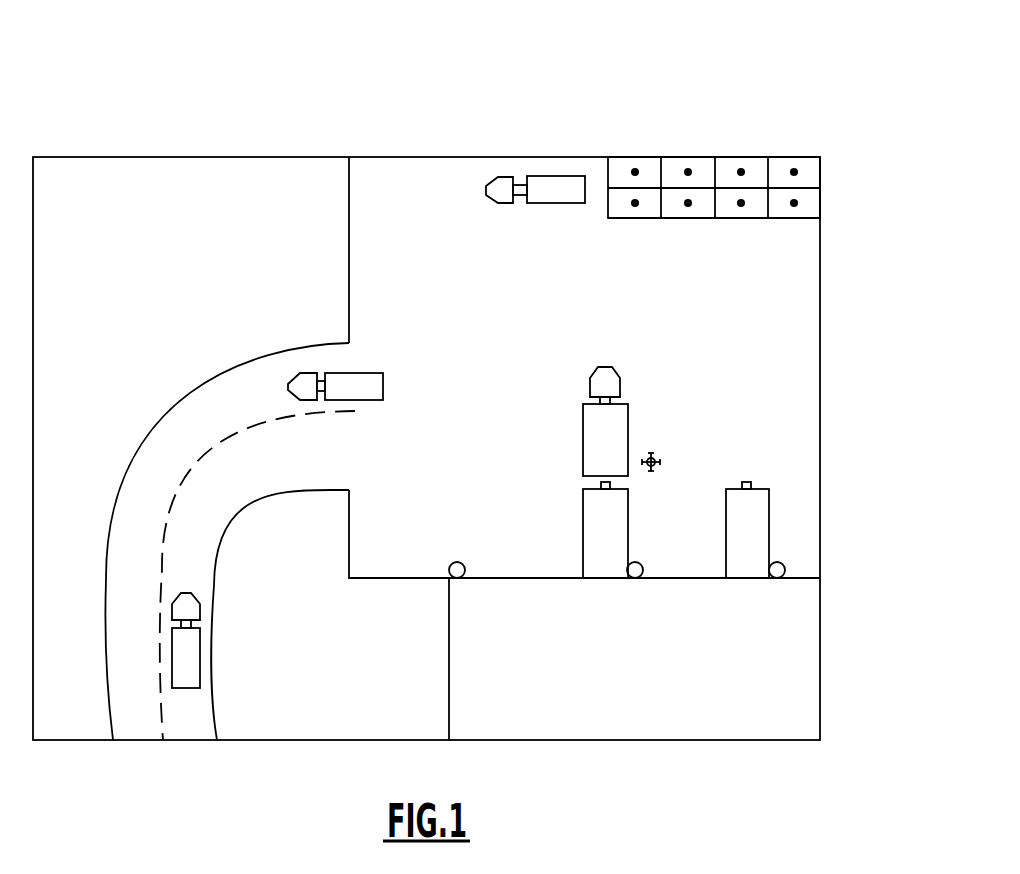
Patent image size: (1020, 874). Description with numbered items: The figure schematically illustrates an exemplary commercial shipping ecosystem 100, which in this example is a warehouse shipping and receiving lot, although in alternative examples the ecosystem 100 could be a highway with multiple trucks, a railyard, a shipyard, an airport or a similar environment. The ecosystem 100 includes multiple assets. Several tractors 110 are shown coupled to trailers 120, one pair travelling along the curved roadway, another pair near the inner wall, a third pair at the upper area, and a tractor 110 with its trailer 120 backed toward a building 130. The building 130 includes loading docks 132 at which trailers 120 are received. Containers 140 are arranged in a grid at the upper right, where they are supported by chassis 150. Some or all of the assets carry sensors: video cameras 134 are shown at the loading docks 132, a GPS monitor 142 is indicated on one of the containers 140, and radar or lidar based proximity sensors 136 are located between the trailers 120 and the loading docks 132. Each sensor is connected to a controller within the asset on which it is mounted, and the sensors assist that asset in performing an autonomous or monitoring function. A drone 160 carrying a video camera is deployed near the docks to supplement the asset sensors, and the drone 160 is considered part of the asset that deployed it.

The commercial shipping ecosystem 100 is at (272, 78).
The tractor 110 is at (502, 204).
The trailer 120 is at (563, 176).
The building 130 is at (657, 675).
The loading dock 132 is at (593, 537).
The video camera 134 is at (457, 562).
The proximity sensor 136 is at (602, 480).
The container 140 is at (670, 168).
The GPS monitor 142 is at (795, 168).
The chassis 150 is at (795, 219).
The drone 160 is at (660, 463).